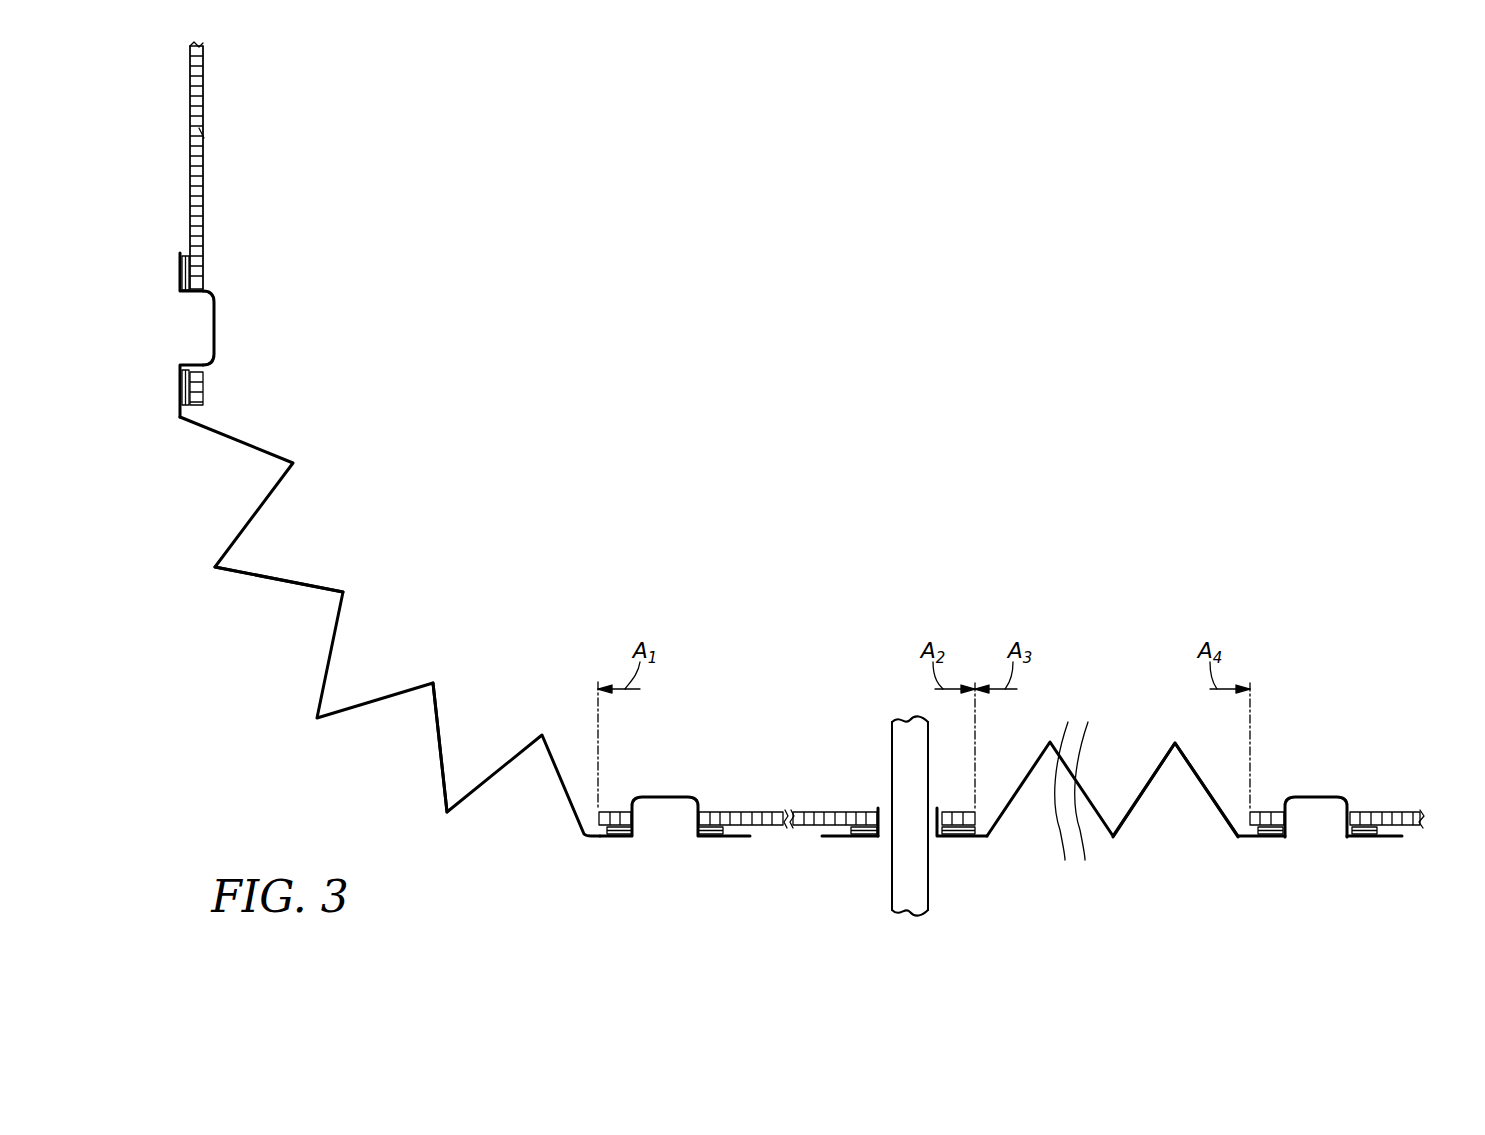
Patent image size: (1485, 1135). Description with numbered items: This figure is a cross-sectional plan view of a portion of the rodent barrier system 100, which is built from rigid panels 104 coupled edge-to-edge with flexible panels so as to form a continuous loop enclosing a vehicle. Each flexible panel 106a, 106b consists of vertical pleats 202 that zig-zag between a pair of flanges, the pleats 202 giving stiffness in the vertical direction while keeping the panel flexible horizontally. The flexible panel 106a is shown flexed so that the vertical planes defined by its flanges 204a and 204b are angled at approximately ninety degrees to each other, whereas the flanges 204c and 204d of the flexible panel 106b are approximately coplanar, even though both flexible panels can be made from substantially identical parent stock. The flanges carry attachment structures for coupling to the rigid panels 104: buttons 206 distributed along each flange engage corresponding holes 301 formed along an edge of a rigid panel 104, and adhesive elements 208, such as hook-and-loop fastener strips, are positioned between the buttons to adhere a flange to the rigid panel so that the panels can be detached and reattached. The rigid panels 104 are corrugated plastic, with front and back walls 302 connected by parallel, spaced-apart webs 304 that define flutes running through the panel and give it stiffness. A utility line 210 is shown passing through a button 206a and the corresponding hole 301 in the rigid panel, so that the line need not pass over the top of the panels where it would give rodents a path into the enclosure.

The rodent barrier system 100 is at (878, 306).
The rigid panel 104 is at (205, 215).
The flexible panel 106a is at (300, 584).
The flexible panel 106b is at (1027, 783).
The pleats 202 is at (262, 577).
The flange 204a is at (176, 406).
The flange 204b is at (742, 840).
The flange 204c is at (849, 840).
The flange 204d is at (1388, 840).
The button 206 is at (215, 330).
The button 206a is at (878, 808).
The adhesive element 208 is at (183, 262).
The utility line 210 is at (928, 888).
The hole 301 is at (205, 372).
The front and back walls 302 is at (190, 148).
The web 304 is at (201, 133).